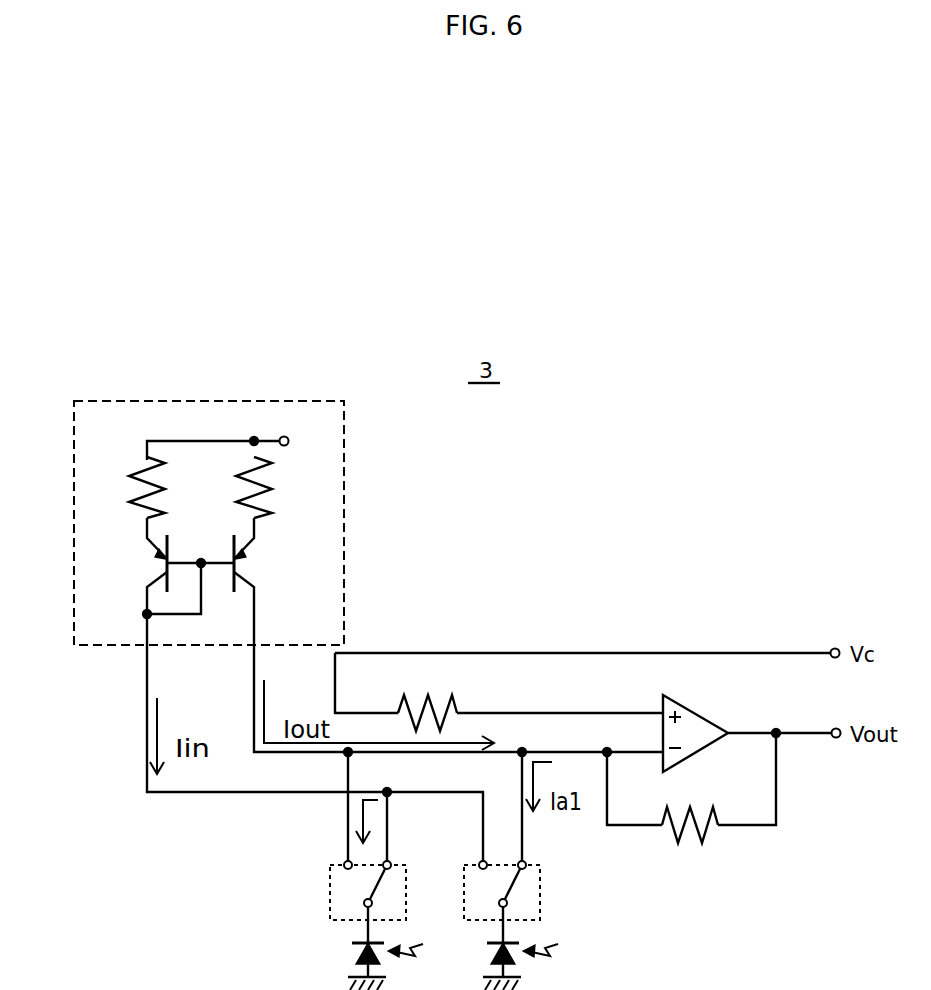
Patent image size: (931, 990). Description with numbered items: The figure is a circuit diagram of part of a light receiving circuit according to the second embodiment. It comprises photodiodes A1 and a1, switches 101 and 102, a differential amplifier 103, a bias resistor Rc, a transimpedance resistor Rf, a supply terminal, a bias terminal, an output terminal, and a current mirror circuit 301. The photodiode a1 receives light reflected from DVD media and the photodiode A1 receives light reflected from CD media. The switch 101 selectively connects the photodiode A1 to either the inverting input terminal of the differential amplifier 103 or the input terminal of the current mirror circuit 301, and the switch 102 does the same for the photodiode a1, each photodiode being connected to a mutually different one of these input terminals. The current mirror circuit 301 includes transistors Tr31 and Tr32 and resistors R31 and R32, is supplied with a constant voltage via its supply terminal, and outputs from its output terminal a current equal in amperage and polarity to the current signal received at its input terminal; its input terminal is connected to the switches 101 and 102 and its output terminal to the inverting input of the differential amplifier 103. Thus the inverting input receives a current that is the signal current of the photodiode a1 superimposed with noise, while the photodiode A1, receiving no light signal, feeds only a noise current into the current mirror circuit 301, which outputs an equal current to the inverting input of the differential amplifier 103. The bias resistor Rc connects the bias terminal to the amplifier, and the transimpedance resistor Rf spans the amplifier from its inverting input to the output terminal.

The current mirror circuit 301 is at (283, 398).
The differential amplifier 103 is at (697, 708).
The switch 101 is at (330, 865).
The switch 102 is at (464, 865).
The resistor R31 is at (124, 487).
The resistor R32 is at (282, 487).
The transistor Tr31 is at (129, 566).
The transistor Tr32 is at (272, 581).
The bias resistor Rc is at (499, 692).
The transimpedance resistor Rf is at (691, 805).
The photodiode A1 is at (371, 948).
The photodiode a1 is at (506, 948).